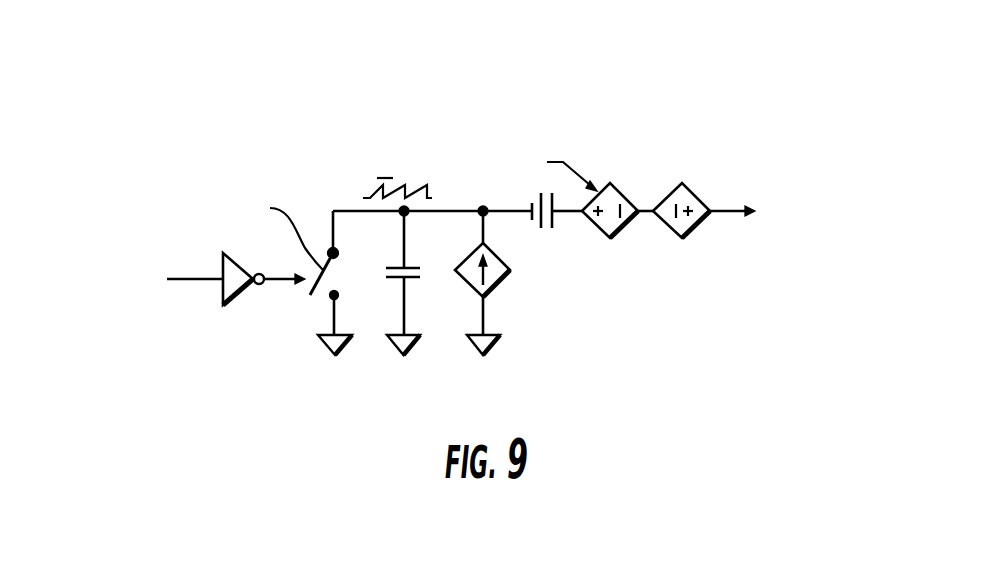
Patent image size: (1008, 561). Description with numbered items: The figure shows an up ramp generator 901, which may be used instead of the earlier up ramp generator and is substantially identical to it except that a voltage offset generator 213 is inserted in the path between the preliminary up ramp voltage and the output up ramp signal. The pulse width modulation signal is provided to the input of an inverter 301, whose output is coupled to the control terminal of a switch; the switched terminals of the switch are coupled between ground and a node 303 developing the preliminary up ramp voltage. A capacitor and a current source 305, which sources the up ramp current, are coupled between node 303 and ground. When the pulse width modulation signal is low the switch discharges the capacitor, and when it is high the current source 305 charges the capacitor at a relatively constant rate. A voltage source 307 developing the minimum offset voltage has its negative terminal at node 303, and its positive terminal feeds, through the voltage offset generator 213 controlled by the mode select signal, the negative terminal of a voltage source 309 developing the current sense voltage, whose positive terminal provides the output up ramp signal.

The inverter 301 is at (222, 262).
The node 303 is at (483, 211).
The current source 305 is at (467, 283).
The voltage source 307 is at (541, 193).
The voltage offset generator 213 is at (620, 192).
The voltage source 309 is at (677, 183).
The up ramp generator 901 is at (288, 400).